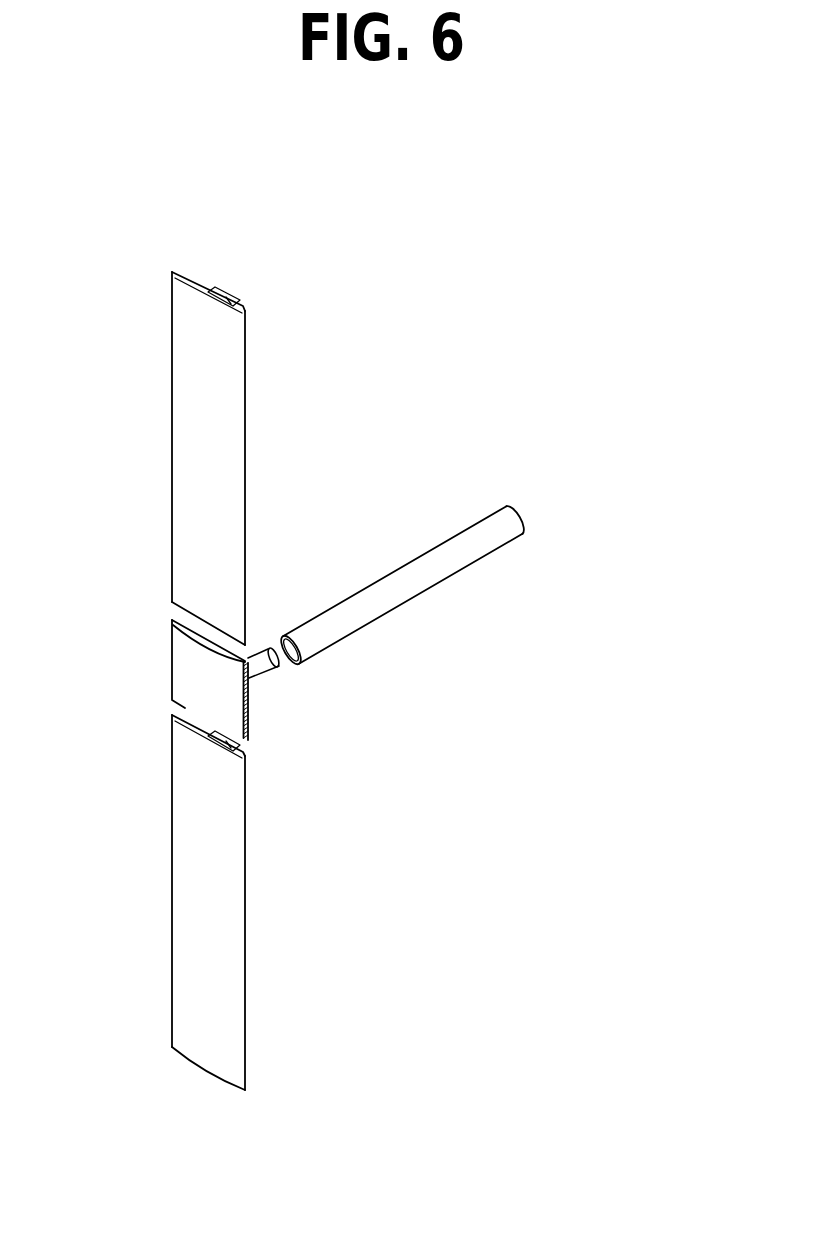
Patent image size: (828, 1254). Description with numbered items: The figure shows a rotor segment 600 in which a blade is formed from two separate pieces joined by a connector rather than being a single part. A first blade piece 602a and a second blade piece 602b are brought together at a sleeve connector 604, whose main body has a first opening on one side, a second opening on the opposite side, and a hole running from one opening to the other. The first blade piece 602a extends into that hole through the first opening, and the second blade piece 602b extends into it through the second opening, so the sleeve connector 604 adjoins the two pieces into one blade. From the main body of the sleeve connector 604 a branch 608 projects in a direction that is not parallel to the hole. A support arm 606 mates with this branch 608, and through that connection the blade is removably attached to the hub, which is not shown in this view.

The rotor segment 600 is at (612, 386).
The first blade piece 602a is at (246, 437).
The second blade piece 602b is at (246, 969).
The sleeve connector 604 is at (171, 665).
The support arm 606 is at (485, 517).
The branch 608 is at (267, 673).